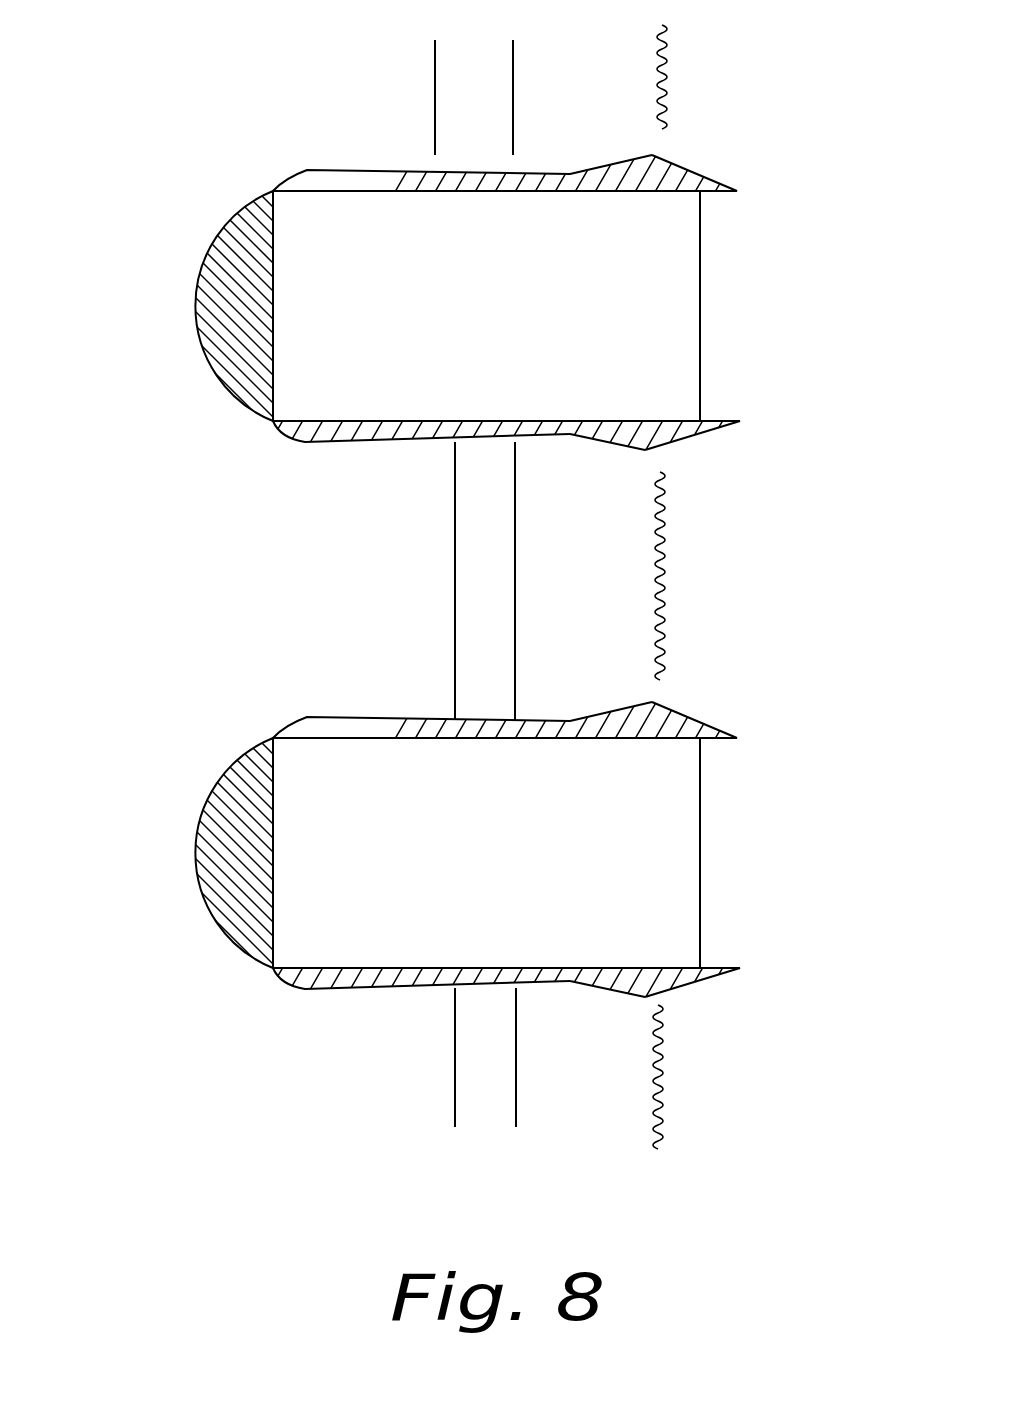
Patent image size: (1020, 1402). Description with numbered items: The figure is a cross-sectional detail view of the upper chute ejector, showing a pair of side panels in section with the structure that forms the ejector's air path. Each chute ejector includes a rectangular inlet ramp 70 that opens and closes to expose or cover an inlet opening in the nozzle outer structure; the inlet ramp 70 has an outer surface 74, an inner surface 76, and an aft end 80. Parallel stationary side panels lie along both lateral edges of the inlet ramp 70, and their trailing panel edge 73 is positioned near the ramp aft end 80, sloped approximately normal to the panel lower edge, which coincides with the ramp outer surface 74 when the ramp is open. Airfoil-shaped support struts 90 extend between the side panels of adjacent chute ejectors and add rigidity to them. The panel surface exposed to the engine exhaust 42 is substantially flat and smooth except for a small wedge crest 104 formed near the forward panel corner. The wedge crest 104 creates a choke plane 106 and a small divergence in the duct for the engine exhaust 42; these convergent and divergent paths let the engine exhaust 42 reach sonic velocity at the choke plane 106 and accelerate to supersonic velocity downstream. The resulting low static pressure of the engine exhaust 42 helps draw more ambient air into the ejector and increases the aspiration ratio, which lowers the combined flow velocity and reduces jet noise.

The engine exhaust 42 is at (176, 603).
The inlet ramp 70 is at (338, 225).
The panel edge 73 is at (722, 175).
The outer surface 74 is at (500, 327).
The inner surface 76 is at (222, 230).
The aft end 80 is at (683, 275).
The support struts 90 is at (507, 105).
The wedge crest 104 is at (667, 145).
The choke plane 106 is at (658, 42).